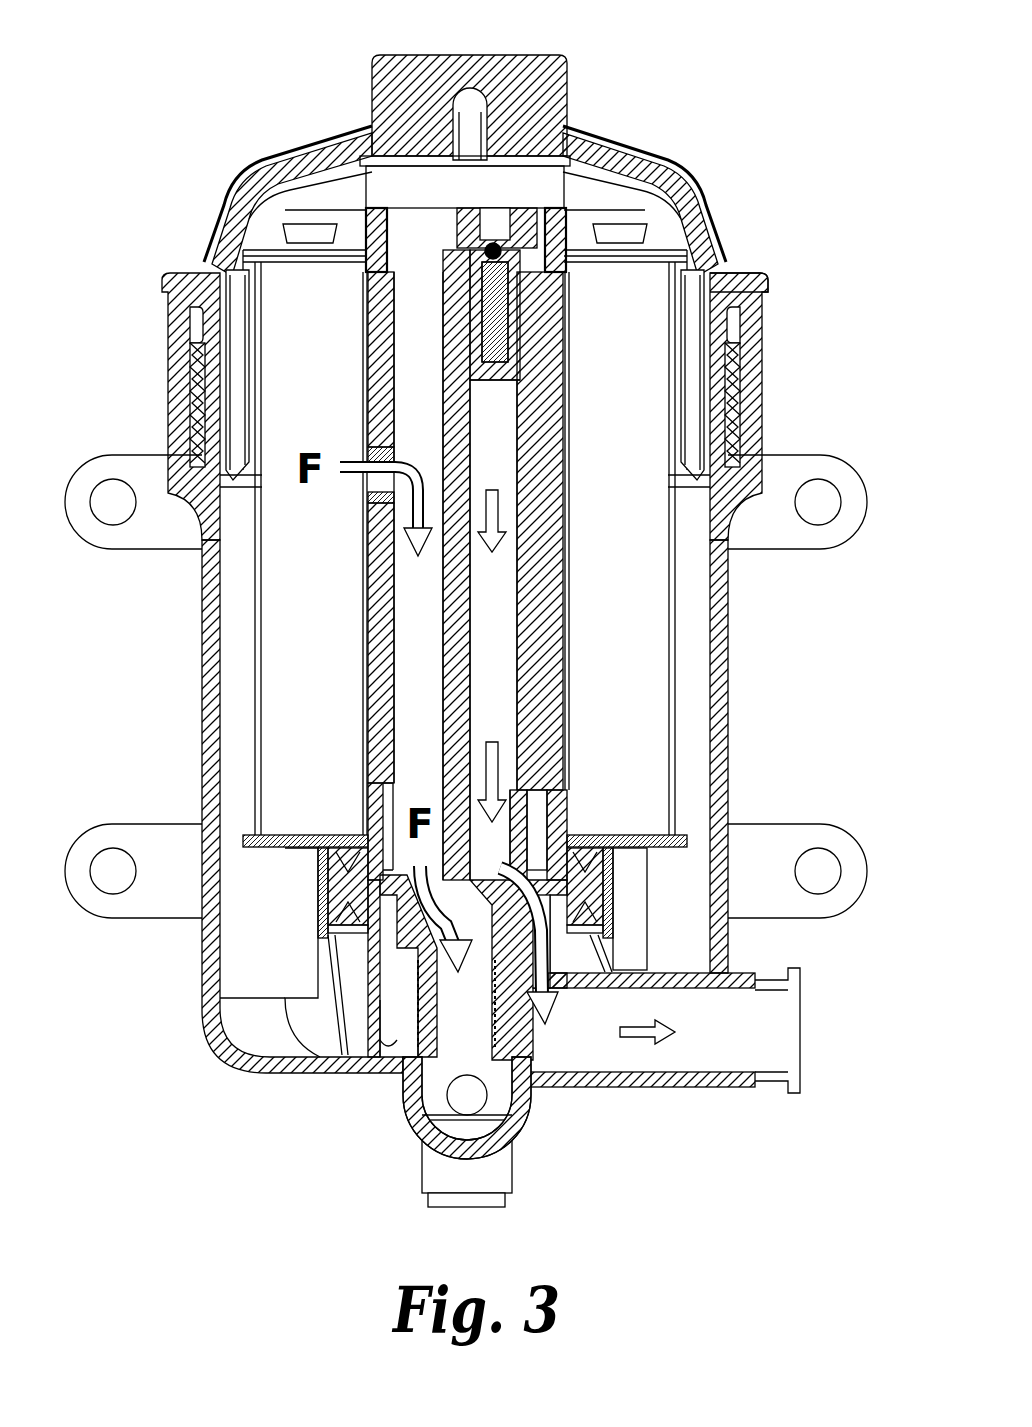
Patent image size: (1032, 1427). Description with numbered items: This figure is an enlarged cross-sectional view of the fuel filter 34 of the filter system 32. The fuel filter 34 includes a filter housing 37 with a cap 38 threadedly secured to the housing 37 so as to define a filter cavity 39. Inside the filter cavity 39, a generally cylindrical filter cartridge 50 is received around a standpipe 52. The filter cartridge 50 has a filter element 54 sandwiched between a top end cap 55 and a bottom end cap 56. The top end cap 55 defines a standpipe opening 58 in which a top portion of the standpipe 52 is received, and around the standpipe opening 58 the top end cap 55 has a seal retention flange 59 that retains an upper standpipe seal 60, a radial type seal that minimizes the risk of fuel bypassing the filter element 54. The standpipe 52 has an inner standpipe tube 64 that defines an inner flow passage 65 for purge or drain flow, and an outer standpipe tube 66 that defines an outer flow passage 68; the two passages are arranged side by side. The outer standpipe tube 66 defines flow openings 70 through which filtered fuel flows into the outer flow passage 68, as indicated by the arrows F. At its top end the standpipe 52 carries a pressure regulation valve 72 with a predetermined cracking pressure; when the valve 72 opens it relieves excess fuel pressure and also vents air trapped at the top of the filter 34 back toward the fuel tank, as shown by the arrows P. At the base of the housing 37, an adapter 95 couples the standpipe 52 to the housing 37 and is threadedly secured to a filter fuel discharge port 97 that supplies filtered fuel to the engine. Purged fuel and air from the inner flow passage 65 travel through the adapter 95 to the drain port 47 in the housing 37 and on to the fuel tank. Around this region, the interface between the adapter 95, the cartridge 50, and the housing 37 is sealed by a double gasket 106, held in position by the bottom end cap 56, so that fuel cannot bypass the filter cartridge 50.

The filter system 32 is at (648, 62).
The fuel filter 34 is at (762, 368).
The filter housing 37 is at (722, 746).
The cap 38 is at (716, 240).
The filter cavity 39 is at (234, 687).
The drain port 47 is at (778, 1082).
The filter cartridge 50 is at (305, 340).
The standpipe 52 is at (394, 310).
The filter element 54 is at (648, 598).
The top end cap 55 is at (756, 292).
The bottom end cap 56 is at (690, 846).
The standpipe opening 58 is at (412, 246).
The seal retention flange 59 is at (378, 246).
The upper standpipe seal 60 is at (374, 226).
The inner standpipe tube 64 is at (456, 653).
The inner flow passage 65 is at (494, 588).
The outer standpipe tube 66 is at (380, 718).
The outer flow passage 68 is at (416, 775).
The flow openings 70 is at (394, 440).
The pressure regulation valve 72 is at (526, 214).
The adapter 95 is at (415, 955).
The filter fuel discharge port 97 is at (500, 1097).
The double gasket 106 is at (368, 872).